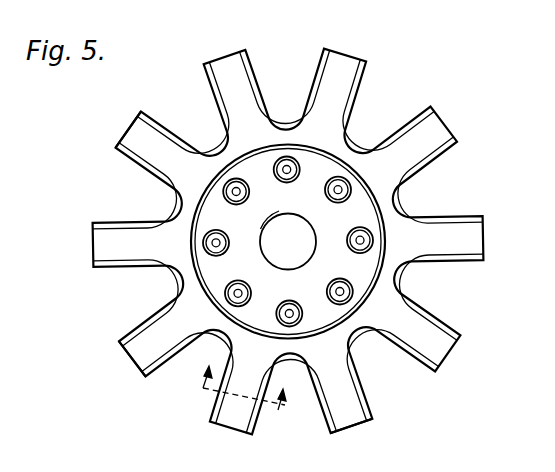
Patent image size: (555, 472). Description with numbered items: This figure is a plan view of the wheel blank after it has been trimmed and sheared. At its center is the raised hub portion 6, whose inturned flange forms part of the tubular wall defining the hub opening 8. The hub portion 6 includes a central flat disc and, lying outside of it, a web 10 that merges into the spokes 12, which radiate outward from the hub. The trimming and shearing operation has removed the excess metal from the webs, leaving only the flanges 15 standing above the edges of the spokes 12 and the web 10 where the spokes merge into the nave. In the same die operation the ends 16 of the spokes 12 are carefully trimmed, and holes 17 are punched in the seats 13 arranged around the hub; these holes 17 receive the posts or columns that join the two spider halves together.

The raised hub portion 6 is at (240, 391).
The hub opening 8 is at (288, 240).
The web 10 is at (277, 138).
The spokes 12 is at (230, 60).
The seats 13 is at (213, 230).
The flanges 15 is at (216, 89).
The ends of the spokes 16 is at (127, 122).
The holes 17 is at (237, 196).